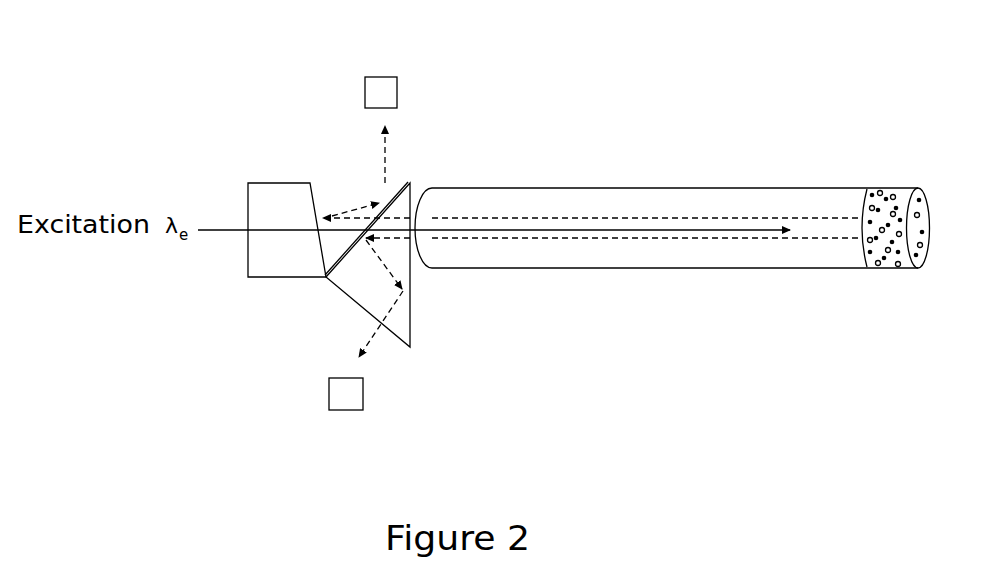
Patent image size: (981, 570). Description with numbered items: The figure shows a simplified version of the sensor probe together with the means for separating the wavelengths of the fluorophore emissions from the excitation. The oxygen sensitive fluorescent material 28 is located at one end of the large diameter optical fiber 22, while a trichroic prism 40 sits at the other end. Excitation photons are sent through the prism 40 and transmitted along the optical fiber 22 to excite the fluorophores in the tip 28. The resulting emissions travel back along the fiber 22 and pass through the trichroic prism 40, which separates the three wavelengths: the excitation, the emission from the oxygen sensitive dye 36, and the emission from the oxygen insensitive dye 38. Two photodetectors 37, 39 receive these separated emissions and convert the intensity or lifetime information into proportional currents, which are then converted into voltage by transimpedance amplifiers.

The optical fiber 22 is at (632, 188).
The oxygen sensitive fluorescent material 28 is at (878, 195).
The emission from the oxygen sensitive dye 36 is at (392, 122).
The photodetector 37 is at (360, 63).
The emission from the oxygen insensitive dye 38 is at (365, 362).
The photodetector 39 is at (341, 418).
The trichroic prism 40 is at (273, 279).